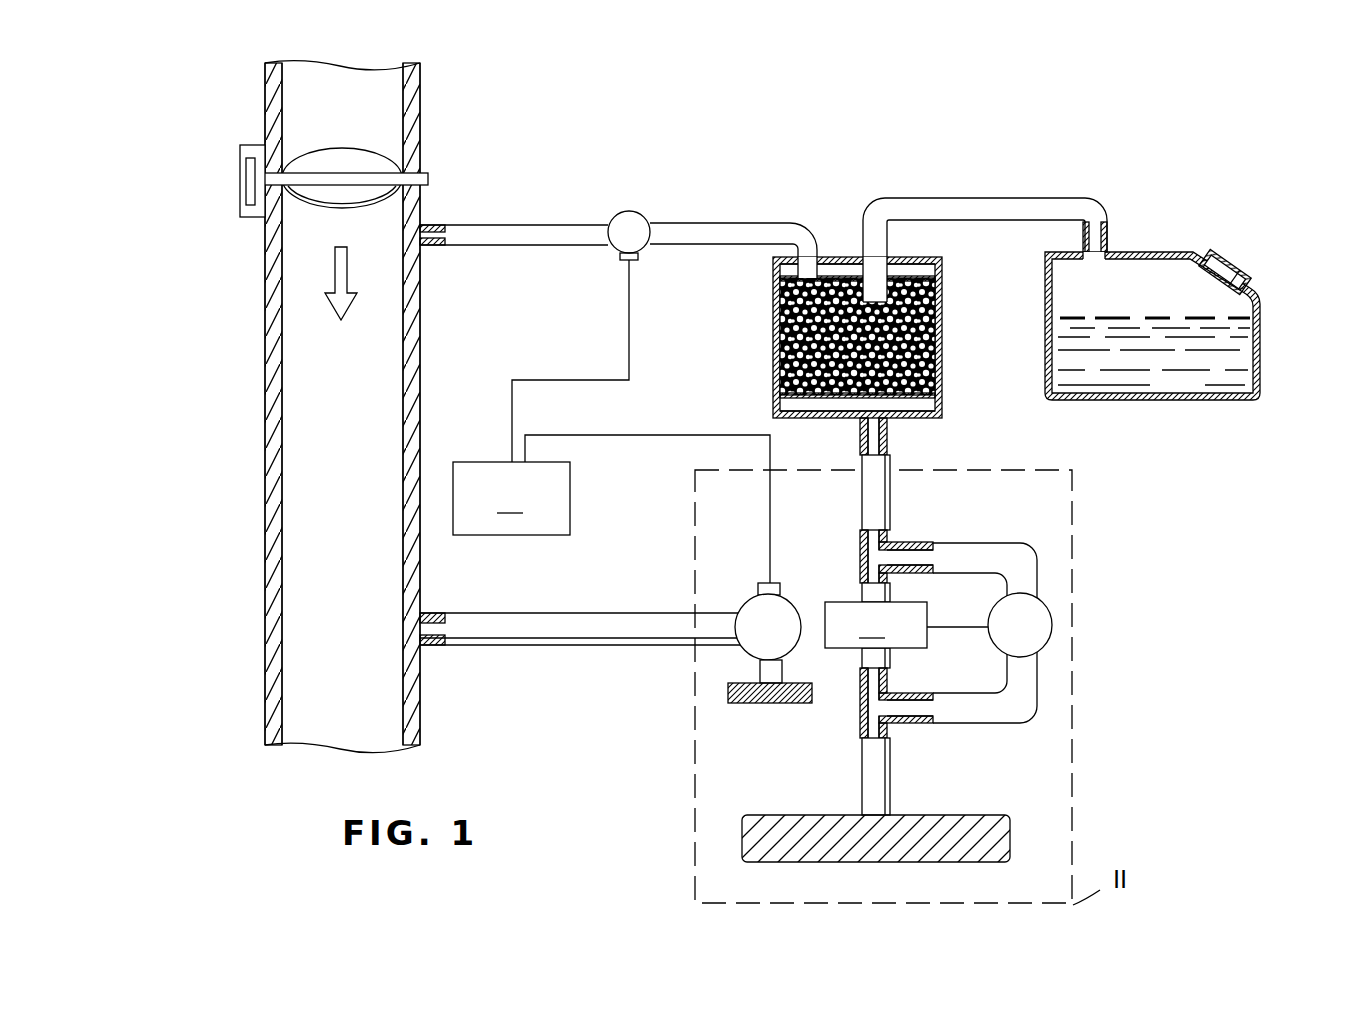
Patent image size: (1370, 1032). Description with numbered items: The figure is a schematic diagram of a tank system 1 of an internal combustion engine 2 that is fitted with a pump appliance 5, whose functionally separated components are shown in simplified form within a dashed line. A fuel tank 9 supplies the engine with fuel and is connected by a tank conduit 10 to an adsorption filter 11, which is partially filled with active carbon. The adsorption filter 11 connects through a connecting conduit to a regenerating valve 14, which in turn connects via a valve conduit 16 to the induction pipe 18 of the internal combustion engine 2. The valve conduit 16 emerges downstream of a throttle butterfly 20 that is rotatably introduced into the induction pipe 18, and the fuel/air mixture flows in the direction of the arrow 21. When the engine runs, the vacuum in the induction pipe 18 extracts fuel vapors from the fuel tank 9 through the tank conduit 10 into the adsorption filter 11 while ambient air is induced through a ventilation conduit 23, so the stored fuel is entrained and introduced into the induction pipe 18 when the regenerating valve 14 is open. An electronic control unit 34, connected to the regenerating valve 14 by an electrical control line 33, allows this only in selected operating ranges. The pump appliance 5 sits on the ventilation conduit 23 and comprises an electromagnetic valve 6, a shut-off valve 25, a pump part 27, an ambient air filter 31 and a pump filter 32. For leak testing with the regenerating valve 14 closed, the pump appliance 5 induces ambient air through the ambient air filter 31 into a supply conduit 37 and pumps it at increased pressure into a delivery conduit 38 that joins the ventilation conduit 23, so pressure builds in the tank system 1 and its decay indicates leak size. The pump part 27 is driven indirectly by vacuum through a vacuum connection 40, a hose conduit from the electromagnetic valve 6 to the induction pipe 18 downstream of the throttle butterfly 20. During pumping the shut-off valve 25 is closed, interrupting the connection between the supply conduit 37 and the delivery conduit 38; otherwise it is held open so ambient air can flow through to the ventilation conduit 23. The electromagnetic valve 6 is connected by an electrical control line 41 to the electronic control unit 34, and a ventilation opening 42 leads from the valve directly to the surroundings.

The tank system 1 is at (1258, 174).
The internal combustion engine 2 is at (272, 530).
The pump appliance 5 is at (1075, 512).
The electromagnetic valve 6 is at (752, 640).
The fuel tank 9 is at (1195, 297).
The tank conduit 10 is at (960, 200).
The adsorption filter 11 is at (773, 346).
The regenerating valve 14 is at (628, 211).
The valve conduit 16 is at (505, 233).
The induction pipe 18 is at (295, 368).
The throttle butterfly 20 is at (343, 157).
The arrow 21 is at (343, 305).
The ventilation conduit 23 is at (882, 428).
The shut-off valve 25 is at (1052, 636).
The pump part 27 is at (876, 625).
The ambient air filter 31 is at (900, 850).
The pump filter 32 is at (762, 705).
The electrical control line 33 is at (629, 325).
The electronic control unit 34 is at (511, 498).
The supply conduit 37 is at (875, 775).
The delivery conduit 38 is at (875, 500).
The vacuum connection 40 is at (540, 625).
The electrical control line 41 is at (650, 437).
The ventilation opening 42 is at (772, 670).